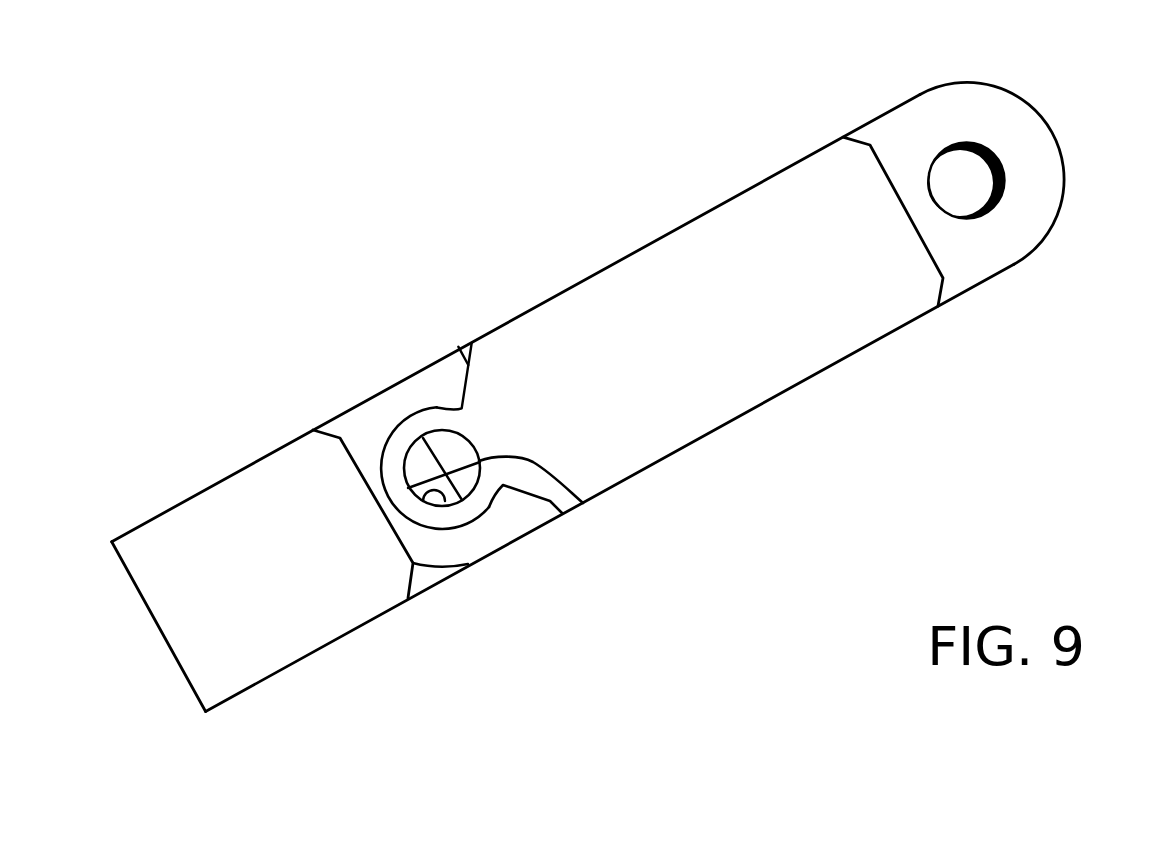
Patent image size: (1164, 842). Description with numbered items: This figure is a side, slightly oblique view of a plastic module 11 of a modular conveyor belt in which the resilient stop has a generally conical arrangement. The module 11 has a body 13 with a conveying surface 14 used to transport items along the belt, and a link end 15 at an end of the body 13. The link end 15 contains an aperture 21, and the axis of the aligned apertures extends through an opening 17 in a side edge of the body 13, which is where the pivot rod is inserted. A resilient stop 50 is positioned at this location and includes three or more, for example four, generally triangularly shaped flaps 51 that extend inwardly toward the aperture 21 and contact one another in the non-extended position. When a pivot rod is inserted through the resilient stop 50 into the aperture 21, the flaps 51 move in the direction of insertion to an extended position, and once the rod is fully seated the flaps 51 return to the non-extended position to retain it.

The plastic module 11 is at (342, 617).
The body 13 is at (235, 663).
The conveying surface 14 is at (183, 501).
The link end 15 is at (1040, 130).
The opening 17 is at (452, 500).
The aperture 21 is at (993, 197).
The resilient stop 50 is at (583, 503).
The flap 51 is at (448, 445).